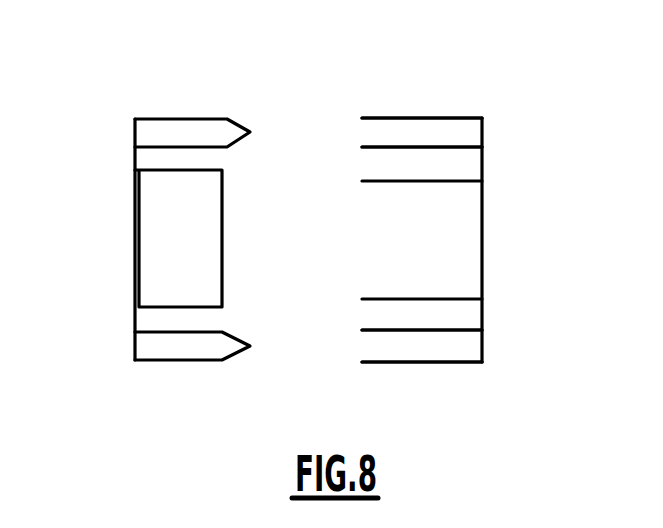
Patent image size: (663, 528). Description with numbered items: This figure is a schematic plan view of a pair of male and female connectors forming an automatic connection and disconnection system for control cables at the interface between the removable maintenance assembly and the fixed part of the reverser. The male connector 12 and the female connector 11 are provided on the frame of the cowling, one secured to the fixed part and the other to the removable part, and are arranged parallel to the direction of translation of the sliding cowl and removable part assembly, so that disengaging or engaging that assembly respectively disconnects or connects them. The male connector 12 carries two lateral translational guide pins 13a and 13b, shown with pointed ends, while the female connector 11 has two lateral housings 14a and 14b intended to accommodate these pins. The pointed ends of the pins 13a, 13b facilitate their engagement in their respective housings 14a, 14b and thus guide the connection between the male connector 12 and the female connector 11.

The female connector 11 is at (447, 237).
The male connector 12 is at (160, 230).
The lateral translational guide pin 13a is at (217, 132).
The lateral translational guide pin 13b is at (220, 347).
The lateral housing 14a is at (467, 133).
The lateral housing 14b is at (455, 346).